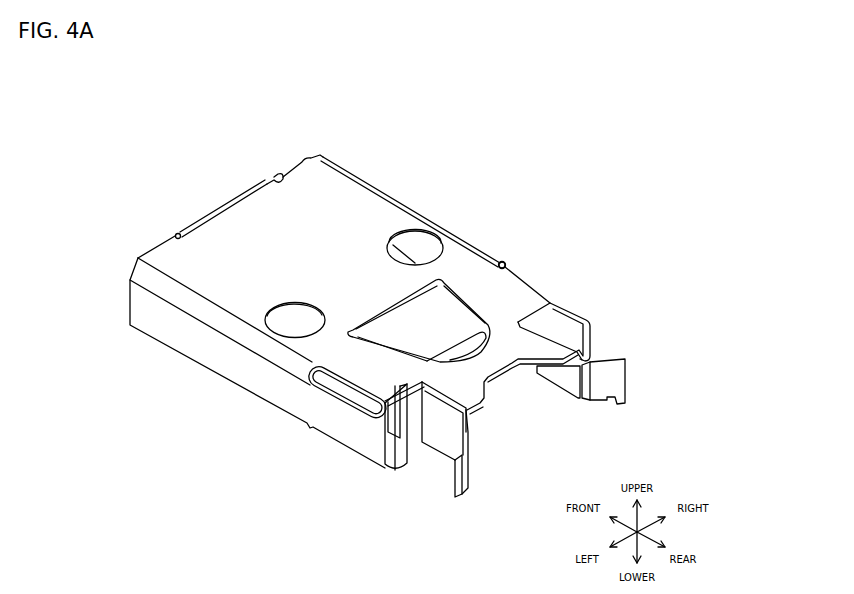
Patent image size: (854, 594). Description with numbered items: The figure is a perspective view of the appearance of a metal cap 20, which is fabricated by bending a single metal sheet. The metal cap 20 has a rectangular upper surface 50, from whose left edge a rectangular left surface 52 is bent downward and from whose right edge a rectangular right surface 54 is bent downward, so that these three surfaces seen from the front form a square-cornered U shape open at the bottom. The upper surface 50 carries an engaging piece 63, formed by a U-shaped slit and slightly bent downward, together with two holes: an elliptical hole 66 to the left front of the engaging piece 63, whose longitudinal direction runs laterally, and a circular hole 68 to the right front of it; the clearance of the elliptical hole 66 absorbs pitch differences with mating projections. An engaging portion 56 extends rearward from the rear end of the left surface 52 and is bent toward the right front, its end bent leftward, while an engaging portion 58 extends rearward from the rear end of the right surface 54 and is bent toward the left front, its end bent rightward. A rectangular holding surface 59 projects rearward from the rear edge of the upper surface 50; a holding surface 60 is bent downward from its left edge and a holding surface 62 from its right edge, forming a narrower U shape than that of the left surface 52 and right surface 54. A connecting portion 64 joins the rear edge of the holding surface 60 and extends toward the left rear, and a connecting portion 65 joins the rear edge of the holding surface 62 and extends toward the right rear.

The metal cap 20 is at (163, 177).
The upper surface 50 is at (340, 197).
The left surface 52 is at (212, 360).
The right surface 54 is at (505, 262).
The engaging portion 56 is at (387, 430).
The engaging portion 58 is at (562, 332).
The holding surface 59 is at (503, 378).
The holding surface 60 is at (440, 437).
The holding surface 62 is at (567, 373).
The engaging piece 63 is at (440, 332).
The connecting portion 64 is at (467, 470).
The connecting portion 65 is at (630, 380).
The hole 66 is at (293, 317).
The hole 68 is at (417, 245).